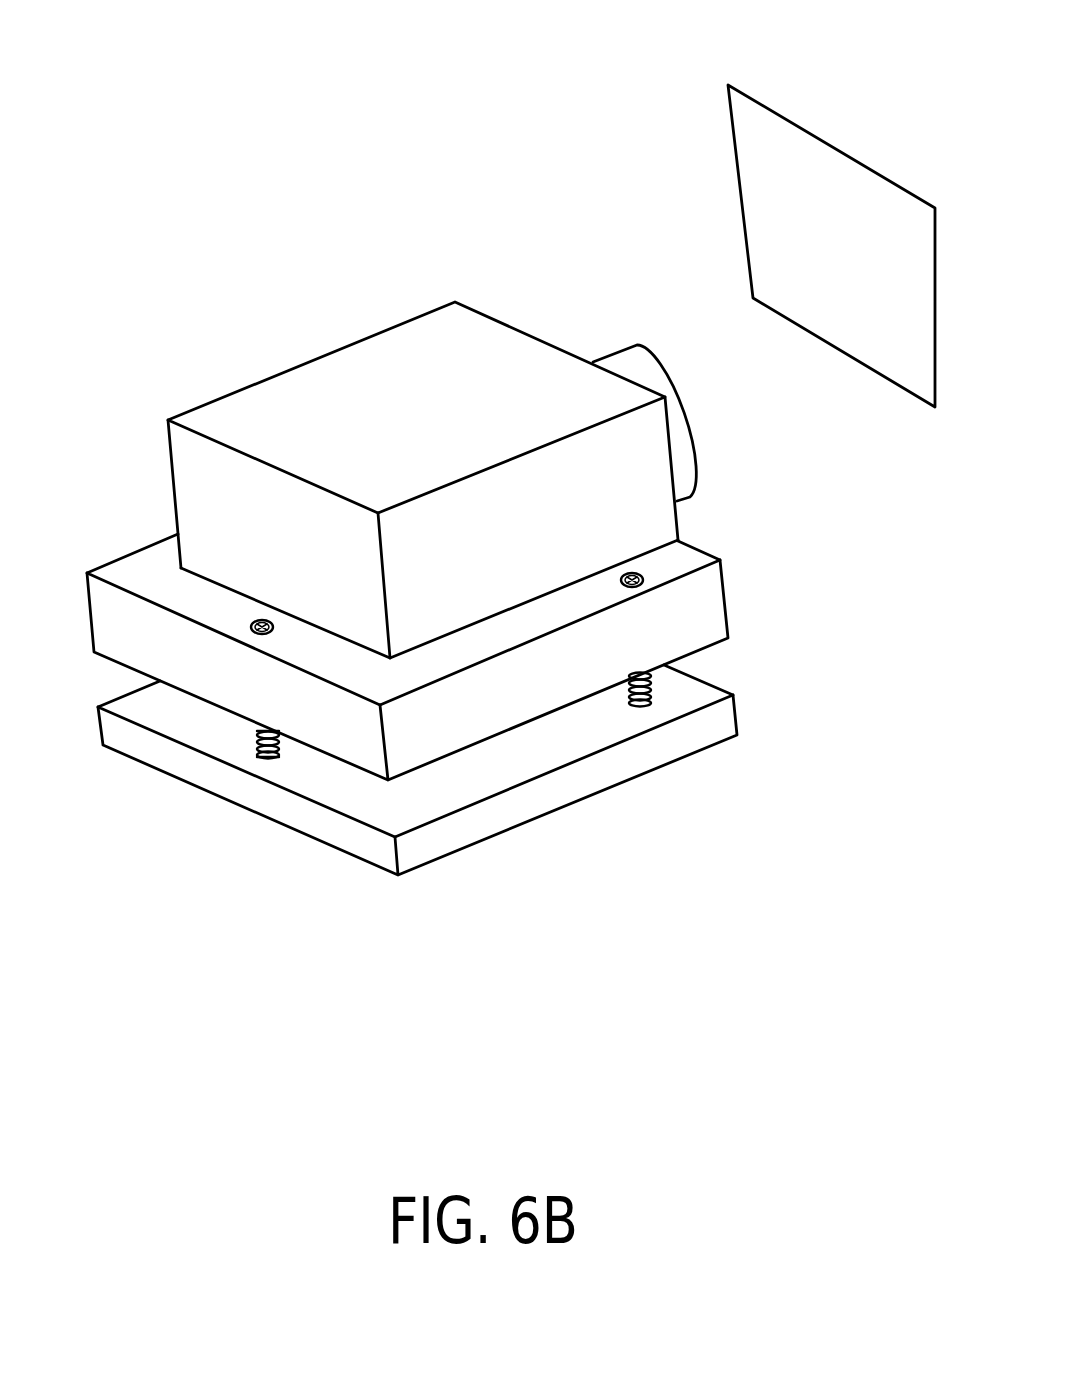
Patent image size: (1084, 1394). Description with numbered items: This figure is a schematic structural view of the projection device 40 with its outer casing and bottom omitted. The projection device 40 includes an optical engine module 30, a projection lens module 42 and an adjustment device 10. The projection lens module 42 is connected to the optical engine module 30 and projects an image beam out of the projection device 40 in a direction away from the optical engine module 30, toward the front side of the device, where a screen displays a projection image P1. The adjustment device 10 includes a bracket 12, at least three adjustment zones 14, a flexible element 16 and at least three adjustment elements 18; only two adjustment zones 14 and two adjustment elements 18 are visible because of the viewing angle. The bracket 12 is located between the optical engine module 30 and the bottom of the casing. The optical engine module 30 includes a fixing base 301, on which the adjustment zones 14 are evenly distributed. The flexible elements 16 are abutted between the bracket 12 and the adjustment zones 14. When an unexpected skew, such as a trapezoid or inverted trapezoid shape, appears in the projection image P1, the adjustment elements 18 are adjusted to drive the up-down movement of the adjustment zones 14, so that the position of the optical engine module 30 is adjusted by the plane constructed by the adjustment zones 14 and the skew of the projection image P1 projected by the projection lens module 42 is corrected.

The adjustment device 10 is at (412, 760).
The bracket 12 is at (155, 753).
The adjustment zone 14 is at (248, 628).
The flexible element 16 is at (454, 795).
The adjustment element 18 is at (264, 636).
The optical engine module 30 is at (337, 385).
The fixing base 301 is at (127, 570).
The projection device 40 is at (363, 450).
The projection lens module 42 is at (625, 362).
The projection image P1 is at (798, 147).